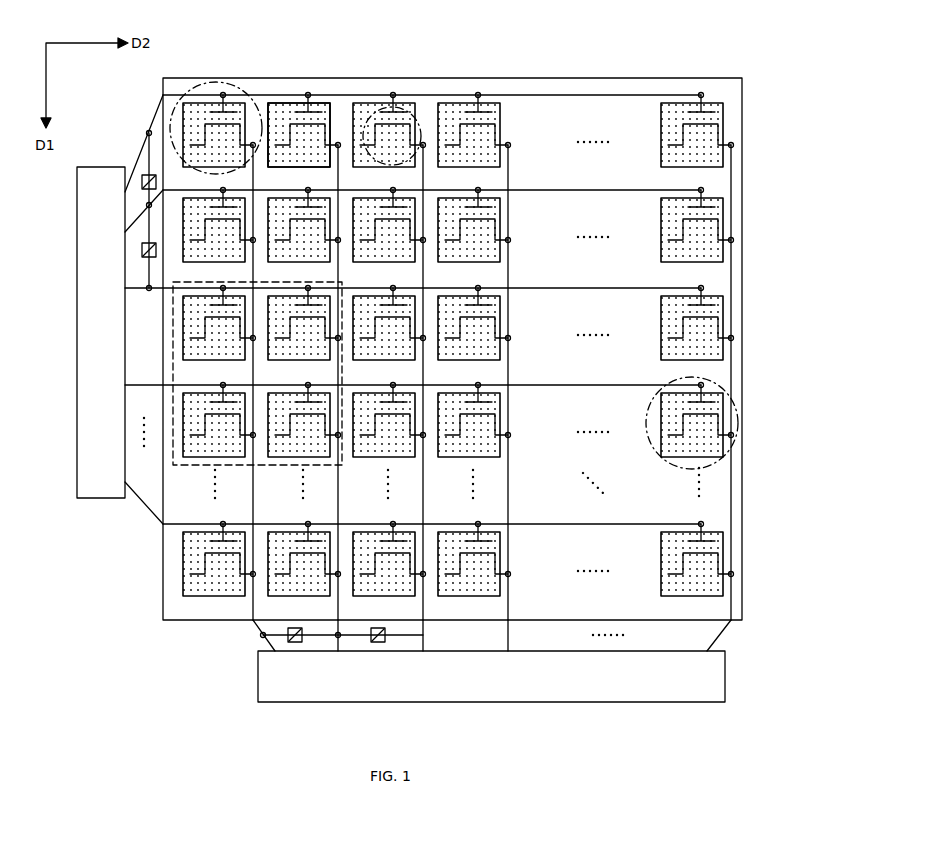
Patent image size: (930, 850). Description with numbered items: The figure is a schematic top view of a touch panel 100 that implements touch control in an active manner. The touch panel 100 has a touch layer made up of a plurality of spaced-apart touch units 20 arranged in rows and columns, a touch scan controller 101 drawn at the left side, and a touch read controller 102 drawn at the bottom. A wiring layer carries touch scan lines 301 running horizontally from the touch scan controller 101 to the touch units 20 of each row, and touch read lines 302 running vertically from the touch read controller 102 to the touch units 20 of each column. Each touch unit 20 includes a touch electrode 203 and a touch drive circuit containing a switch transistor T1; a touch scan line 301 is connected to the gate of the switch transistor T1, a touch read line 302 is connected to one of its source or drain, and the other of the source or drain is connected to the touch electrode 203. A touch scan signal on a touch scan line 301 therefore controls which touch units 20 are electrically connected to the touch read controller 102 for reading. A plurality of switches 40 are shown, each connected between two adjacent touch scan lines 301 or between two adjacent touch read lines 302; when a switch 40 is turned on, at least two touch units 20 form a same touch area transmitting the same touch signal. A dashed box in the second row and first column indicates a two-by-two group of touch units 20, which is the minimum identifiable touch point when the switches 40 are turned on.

The touch panel 100 is at (467, 25).
The touch scan controller 101 is at (93, 483).
The touch read controller 102 is at (288, 678).
The touch unit 20 is at (229, 93).
The touch electrode 203 is at (285, 108).
The switch transistor T1 is at (369, 108).
The touch scan line 301 is at (621, 95).
The touch read line 302 is at (734, 609).
The switch 40 is at (146, 245).